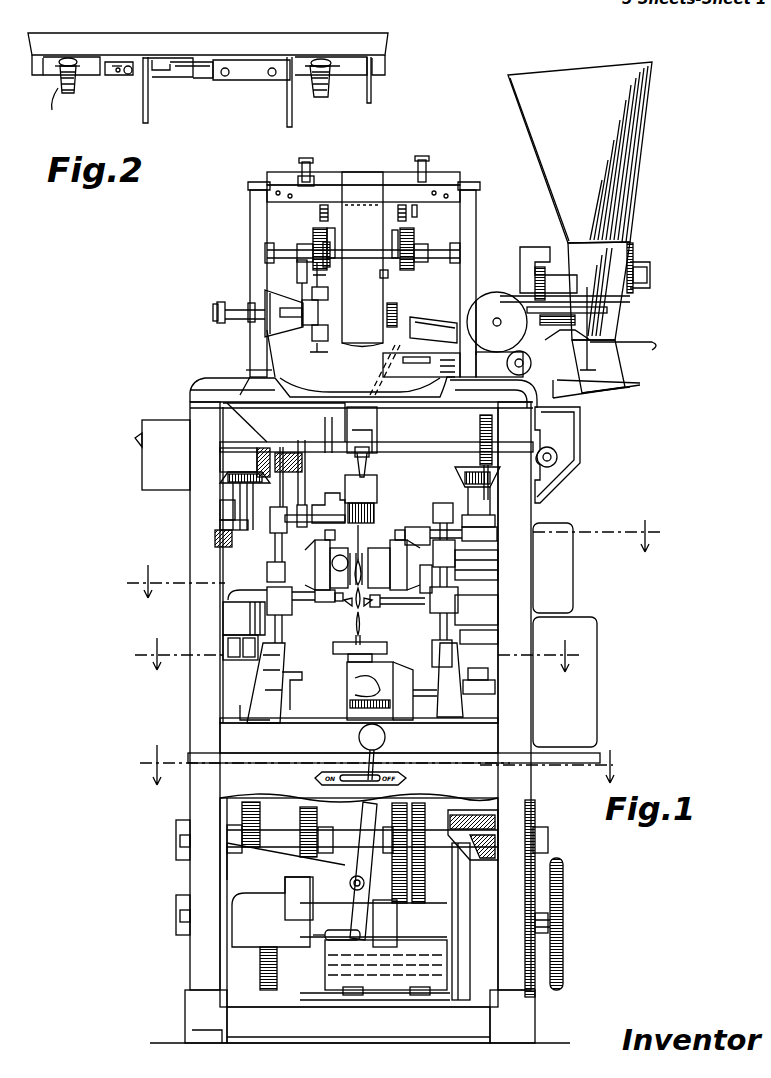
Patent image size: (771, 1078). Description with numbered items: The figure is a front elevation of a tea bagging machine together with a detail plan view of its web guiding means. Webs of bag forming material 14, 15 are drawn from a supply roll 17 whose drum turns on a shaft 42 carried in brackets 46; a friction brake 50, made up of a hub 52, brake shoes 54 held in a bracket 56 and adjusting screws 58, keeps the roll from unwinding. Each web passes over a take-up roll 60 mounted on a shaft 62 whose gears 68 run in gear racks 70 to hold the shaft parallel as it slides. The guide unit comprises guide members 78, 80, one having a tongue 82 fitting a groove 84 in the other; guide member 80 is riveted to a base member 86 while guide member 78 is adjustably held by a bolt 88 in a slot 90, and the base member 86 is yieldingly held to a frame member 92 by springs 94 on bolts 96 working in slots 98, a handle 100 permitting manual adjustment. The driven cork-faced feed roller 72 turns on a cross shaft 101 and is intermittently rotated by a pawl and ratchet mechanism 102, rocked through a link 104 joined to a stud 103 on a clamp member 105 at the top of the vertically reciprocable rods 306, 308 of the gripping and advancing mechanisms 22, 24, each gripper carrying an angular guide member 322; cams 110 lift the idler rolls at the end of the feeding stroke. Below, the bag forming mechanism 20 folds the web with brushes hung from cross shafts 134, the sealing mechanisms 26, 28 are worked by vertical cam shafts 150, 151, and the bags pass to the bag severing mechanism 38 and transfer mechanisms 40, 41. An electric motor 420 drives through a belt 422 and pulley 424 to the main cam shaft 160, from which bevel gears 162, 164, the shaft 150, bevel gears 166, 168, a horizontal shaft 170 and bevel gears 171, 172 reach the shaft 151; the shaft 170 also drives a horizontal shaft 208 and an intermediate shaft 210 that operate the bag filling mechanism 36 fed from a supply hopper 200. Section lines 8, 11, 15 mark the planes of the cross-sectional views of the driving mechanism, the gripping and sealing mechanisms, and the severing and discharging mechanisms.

In FIG. 1, the section line 8— 8 is at (318, 759).
In FIG. 1, the section line 11— 11 is at (164, 579).
In FIG. 1, the bag forming material 14 is at (352, 373).
In FIG. 1, the bag forming material 15 is at (170, 653).
In FIG. 1, the supply roll 17 is at (380, 288).
In FIG. 1, the bag forming mechanism 20 is at (330, 481).
In FIG. 1, the gripping and advancing mechanism 22 is at (340, 610).
In FIG. 1, the gripping and advancing mechanism 24 is at (385, 610).
In FIG. 1, the bag sealing mechanism 26 is at (312, 555).
In FIG. 1, the bag sealing mechanism 28 is at (495, 553).
In FIG. 1, the bag filling mechanism 36 is at (652, 305).
In FIG. 1, the bag severing mechanism 38 is at (332, 656).
In FIG. 1, the transfer mechanism 40 is at (268, 676).
In FIG. 1, the transfer mechanism 41 is at (497, 692).
In FIG. 1, the shaft 42 is at (217, 312).
In FIG. 1, the bracket 46 is at (252, 225).
In FIG. 1, the friction brake 50 is at (245, 300).
In FIG. 1, the hub 52 is at (320, 318).
In FIG. 1, the brake shoe 54 is at (321, 297).
In FIG. 1, the bracket 56 is at (275, 300).
In FIG. 1, the adjusting screw 58 is at (300, 275).
In FIG. 1, the take-up roll 60 is at (400, 175).
In FIG. 1, the shaft 62 is at (300, 178).
In FIG. 1, the gear 68 is at (304, 165).
In FIG. 1, the gear rack 70 is at (300, 188).
In FIG. 1, the feed roller 72 is at (388, 270).
In FIG. 2, the guide member 78 is at (150, 118).
In FIG. 2, the guide member 80 is at (287, 115).
In FIG. 2, the tongue 82 is at (196, 68).
In FIG. 2, the groove 84 is at (152, 63).
In FIG. 2, the base member 86 is at (320, 37).
In FIG. 2, the bolt 88 is at (126, 66).
In FIG. 2, the slot 90 is at (126, 70).
In FIG. 2, the frame member 92 is at (388, 47).
In FIG. 2, the spring 94 is at (60, 82).
In FIG. 2, the bolt 96 is at (67, 90).
In FIG. 2, the slot 98 is at (88, 30).
In FIG. 2, the handle 100 is at (372, 90).
In FIG. 1, the cross shaft 101 is at (440, 247).
In FIG. 1, the pawl and ratchet mechanism 102 is at (330, 225).
In FIG. 1, the stud 103 is at (285, 520).
In FIG. 1, the link 104 is at (262, 365).
In FIG. 1, the clamp member 105 is at (278, 510).
In FIG. 1, the cam 110 is at (313, 232).
In FIG. 1, the cross shaft 134 is at (232, 440).
In FIG. 1, the vertical cam shaft 150 is at (482, 535).
In FIG. 1, the vertical cam shaft 151 is at (230, 532).
In FIG. 1, the main cam shaft 160 is at (300, 790).
In FIG. 1, the bevel gear 162 is at (497, 830).
In FIG. 1, the bevel gear 164 is at (490, 790).
In FIG. 1, the bevel gear 166 is at (495, 478).
In FIG. 1, the bevel gear 168 is at (425, 440).
In FIG. 1, the horizontal shaft 170 is at (346, 430).
In FIG. 1, the bevel gear 171 is at (276, 440).
In FIG. 1, the bevel gear 172 is at (225, 478).
In FIG. 1, the supply hopper 200 is at (632, 155).
In FIG. 1, the horizontal shaft 208 is at (557, 460).
In FIG. 1, the intermediate shaft 210 is at (524, 364).
In FIG. 1, the vertically reciprocable rod 306 is at (272, 620).
In FIG. 1, the vertically reciprocable rod 308 is at (450, 632).
In FIG. 1, the angular guide member 322 is at (450, 583).
In FIG. 1, the electric motor 420 is at (405, 995).
In FIG. 1, the belt 422 is at (465, 868).
In FIG. 1, the pulley 424 is at (462, 880).